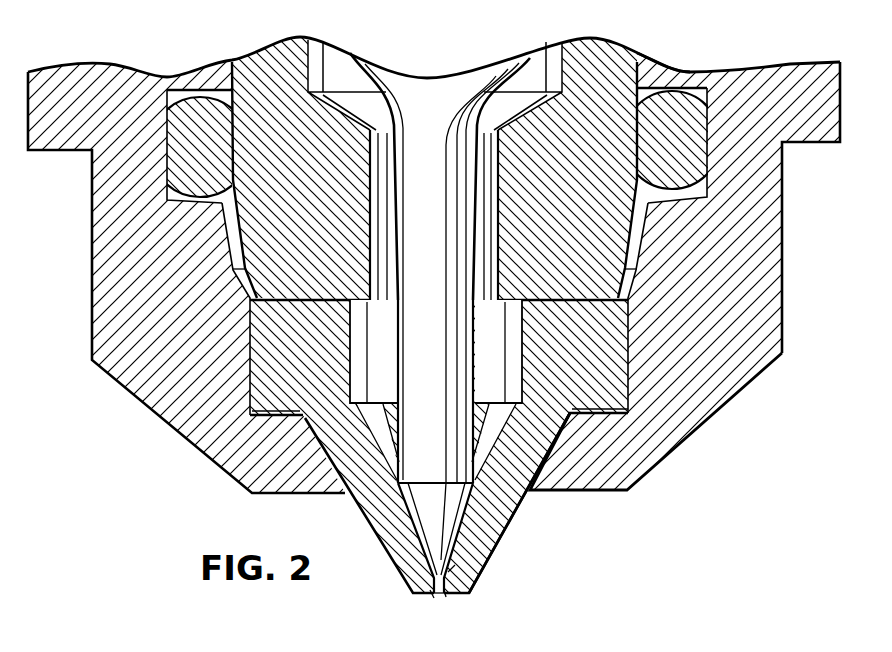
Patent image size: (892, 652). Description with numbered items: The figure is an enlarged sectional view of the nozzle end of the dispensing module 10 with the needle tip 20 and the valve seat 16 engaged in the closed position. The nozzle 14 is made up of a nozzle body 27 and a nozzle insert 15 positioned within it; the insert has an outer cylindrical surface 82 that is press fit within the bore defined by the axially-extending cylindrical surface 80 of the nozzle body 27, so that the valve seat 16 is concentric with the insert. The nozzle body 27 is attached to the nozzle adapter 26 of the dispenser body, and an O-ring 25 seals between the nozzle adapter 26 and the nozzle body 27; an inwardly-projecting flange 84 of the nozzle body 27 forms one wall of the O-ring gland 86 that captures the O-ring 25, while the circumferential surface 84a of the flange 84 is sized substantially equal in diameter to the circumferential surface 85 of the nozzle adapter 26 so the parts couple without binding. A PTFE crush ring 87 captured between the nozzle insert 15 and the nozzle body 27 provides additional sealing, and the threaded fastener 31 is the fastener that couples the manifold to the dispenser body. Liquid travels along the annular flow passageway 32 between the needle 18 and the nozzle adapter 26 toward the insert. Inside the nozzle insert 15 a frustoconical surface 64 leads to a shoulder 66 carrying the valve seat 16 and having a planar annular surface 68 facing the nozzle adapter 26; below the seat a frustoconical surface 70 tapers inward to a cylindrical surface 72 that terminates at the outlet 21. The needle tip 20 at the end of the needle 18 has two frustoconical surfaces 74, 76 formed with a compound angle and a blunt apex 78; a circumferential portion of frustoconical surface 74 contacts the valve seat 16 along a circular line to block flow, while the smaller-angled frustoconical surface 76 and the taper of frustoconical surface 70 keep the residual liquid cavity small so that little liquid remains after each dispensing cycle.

The dispensing module 10 is at (800, 295).
The nozzle 14 is at (784, 228).
The nozzle insert 15 is at (277, 362).
The valve seat 16 is at (410, 480).
The needle 18 is at (428, 90).
The needle tip 20 is at (426, 343).
The outlet 21 is at (437, 597).
The O-ring 25 is at (192, 110).
The nozzle adapter 26 is at (265, 58).
The nozzle body 27 is at (705, 400).
The threaded fastener 31 is at (385, 405).
The flow passageway 32 is at (520, 77).
The frustoconical surface 64 is at (367, 500).
The shoulder 66 is at (388, 552).
The planar annular surface 68 is at (476, 500).
The frustoconical surface 70 is at (454, 567).
The cylindrical surface 72 is at (446, 597).
The frustoconical surface 74 is at (438, 478).
The frustoconical surface 76 is at (408, 593).
The apex 78 is at (432, 597).
The cylindrical surface 80 is at (640, 350).
The outer cylindrical surface 82 is at (622, 358).
The flange 84 is at (693, 77).
The circumferential surface 84a is at (636, 22).
The circumferential surface 85 is at (652, 67).
The O-ring gland 86 is at (698, 167).
The crush ring 87 is at (613, 418).